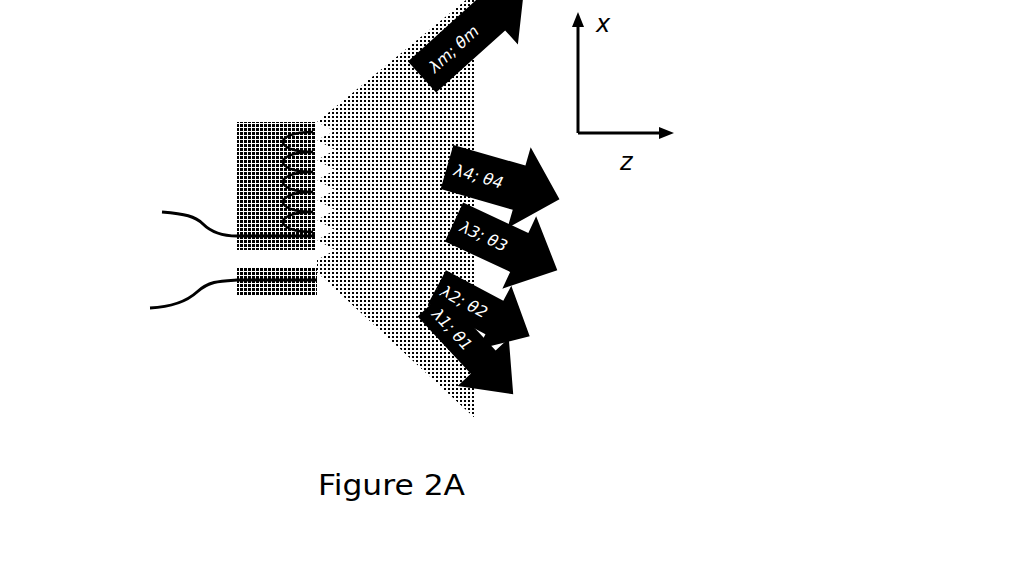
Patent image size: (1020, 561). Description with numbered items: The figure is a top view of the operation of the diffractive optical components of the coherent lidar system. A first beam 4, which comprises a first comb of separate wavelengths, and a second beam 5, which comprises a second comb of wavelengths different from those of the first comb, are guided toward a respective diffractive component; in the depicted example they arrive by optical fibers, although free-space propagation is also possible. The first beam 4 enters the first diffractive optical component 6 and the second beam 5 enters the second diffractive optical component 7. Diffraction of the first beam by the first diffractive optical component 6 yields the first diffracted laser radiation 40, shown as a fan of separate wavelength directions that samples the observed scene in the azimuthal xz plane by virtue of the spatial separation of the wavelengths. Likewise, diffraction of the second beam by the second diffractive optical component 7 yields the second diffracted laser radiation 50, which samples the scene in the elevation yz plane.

The first beam 4 is at (156, 202).
The second beam 5 is at (153, 299).
The first diffractive optical component 6 is at (234, 120).
The second diffractive optical component 7 is at (238, 295).
The first diffracted laser radiation 40 is at (360, 131).
The second diffracted laser radiation 50 is at (340, 285).